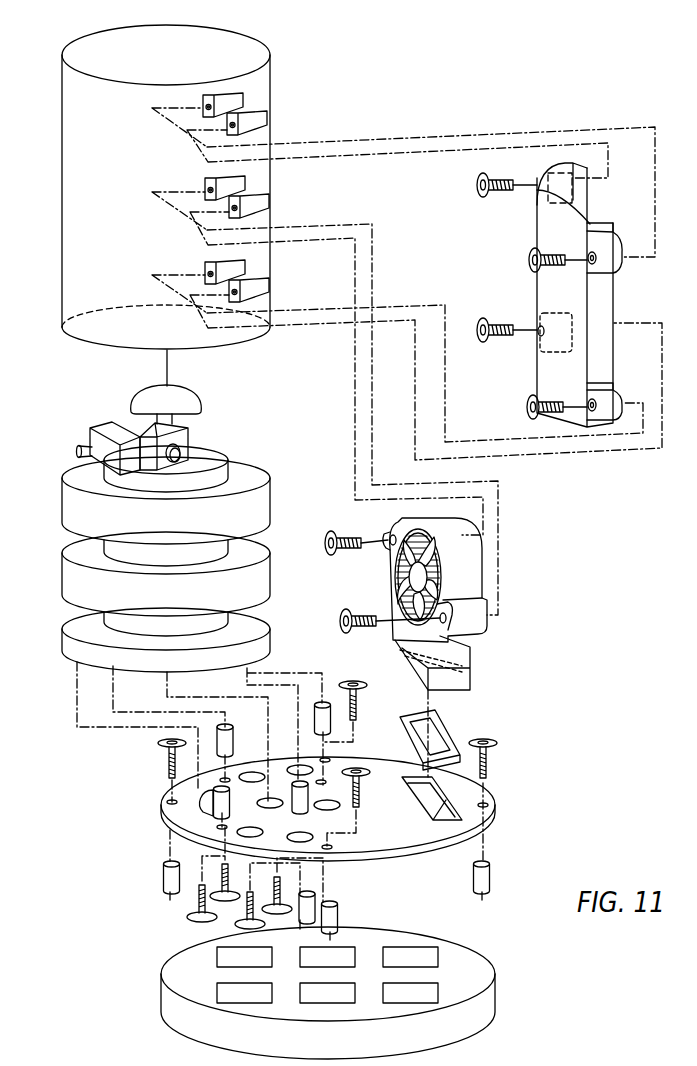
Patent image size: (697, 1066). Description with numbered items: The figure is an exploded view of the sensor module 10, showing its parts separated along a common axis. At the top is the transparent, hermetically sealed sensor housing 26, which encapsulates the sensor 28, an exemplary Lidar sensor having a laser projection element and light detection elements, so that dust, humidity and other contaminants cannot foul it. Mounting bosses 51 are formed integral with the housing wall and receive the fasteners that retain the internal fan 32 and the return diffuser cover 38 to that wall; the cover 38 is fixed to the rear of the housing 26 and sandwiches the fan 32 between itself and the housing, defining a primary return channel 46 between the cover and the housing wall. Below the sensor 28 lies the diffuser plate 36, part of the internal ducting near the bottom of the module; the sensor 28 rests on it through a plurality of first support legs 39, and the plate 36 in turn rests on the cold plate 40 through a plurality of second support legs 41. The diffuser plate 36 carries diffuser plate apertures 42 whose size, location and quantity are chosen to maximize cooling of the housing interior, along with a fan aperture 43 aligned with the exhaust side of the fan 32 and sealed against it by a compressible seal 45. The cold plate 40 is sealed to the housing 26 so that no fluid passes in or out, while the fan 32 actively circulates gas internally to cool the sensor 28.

The sensor module 10 is at (540, 93).
The sensor housing 26 is at (62, 78).
The sensor 28 is at (76, 465).
The internal fan 32 is at (472, 672).
The diffuser plate 36 is at (496, 812).
The return diffuser cover 38 is at (558, 162).
The first support legs 39 is at (229, 797).
The cold plate 40 is at (496, 992).
The second support legs 41 is at (163, 870).
The diffuser plate apertures 42 is at (205, 811).
The fan aperture 43 is at (458, 808).
The compressible seal 45 is at (448, 738).
The primary return channel 46 is at (596, 222).
The mounting bosses 51 is at (258, 112).